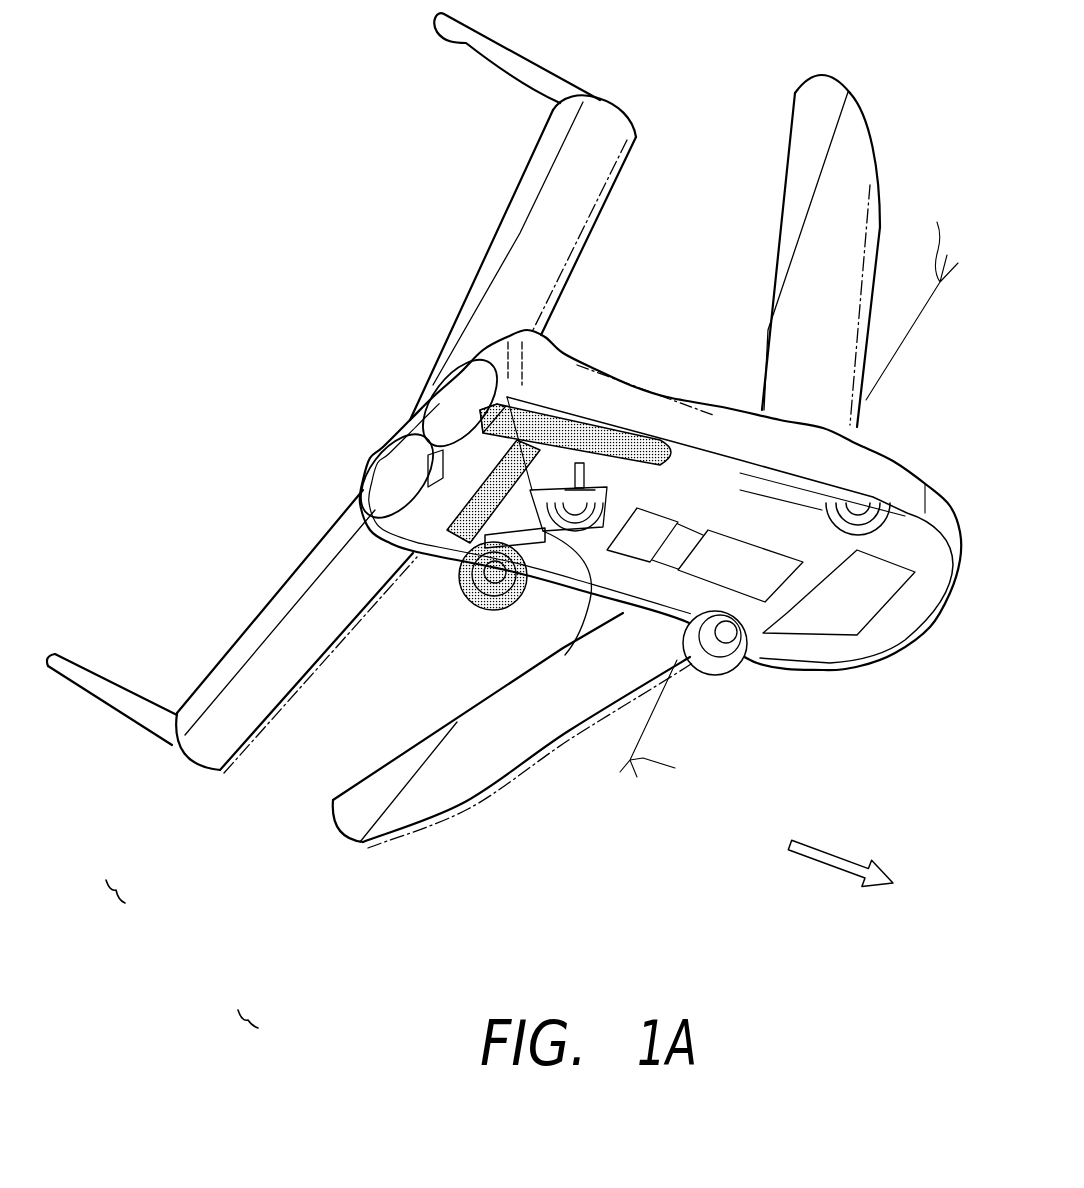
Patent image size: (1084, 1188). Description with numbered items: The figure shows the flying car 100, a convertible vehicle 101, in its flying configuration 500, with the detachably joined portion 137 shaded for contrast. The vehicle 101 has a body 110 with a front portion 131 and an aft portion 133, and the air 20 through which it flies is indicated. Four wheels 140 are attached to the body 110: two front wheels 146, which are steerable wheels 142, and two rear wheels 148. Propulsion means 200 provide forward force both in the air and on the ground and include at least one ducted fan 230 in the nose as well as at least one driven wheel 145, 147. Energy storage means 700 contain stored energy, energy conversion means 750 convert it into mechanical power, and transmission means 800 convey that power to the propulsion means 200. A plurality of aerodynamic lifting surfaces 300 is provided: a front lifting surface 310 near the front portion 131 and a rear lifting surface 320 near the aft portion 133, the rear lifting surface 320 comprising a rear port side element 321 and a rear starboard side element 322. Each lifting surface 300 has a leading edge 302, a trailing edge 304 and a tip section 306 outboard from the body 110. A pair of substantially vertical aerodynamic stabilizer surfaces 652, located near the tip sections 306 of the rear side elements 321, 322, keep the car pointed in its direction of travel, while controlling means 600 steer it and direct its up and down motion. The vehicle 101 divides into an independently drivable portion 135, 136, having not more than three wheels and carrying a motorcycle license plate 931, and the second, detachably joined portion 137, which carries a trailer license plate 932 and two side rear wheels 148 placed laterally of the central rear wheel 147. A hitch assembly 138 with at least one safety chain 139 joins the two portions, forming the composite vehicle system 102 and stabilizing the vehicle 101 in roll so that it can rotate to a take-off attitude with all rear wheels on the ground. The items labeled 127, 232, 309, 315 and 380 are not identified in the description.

The air 20 is at (256, 170).
The flying car 100 is at (235, 1040).
The vehicle 101 is at (235, 1040).
The composite vehicle system 102 is at (90, 913).
The body 110 is at (635, 410).
The forward direction 127 is at (825, 863).
The front portion 131 is at (937, 610).
The aft portion 133 is at (470, 343).
The independently drivable portion 135 is at (336, 439).
The independently drivable portion 136 is at (572, 598).
The detachably joined portion 137 is at (385, 482).
The hitch assembly 138 is at (548, 490).
The safety chain 139 is at (517, 490).
The wheels 140 is at (806, 569).
The steerable wheel 142 is at (806, 569).
The driven wheel 145 is at (525, 597).
The front wheels 146 is at (722, 665).
The central rear wheel 147 is at (578, 636).
The rear wheels 148 is at (655, 457).
The propulsion means 200 is at (330, 468).
The ducted fan 230 is at (365, 432).
The nose opening 232 is at (463, 372).
The aerodynamic lifting surfaces 300 is at (827, 227).
The leading edge 302 is at (287, 708).
The trailing edge 304 is at (503, 203).
The tip section 306 is at (620, 118).
The wing 309 is at (620, 470).
The front lifting surface 310 is at (490, 797).
The pivot axis 315 is at (789, 487).
The rear lifting surface 320 is at (330, 673).
The rear port side element 321 is at (287, 613).
The rear starboard side element 322 is at (558, 172).
The wing tip section 380 is at (810, 102).
The flying configuration 500 is at (90, 913).
The controlling means 600 is at (320, 379).
The vertical aerodynamic stabilizer surfaces 652 is at (467, 40).
The energy storage means 700 is at (747, 567).
The energy conversion means 750 is at (685, 537).
The transmission means 800 is at (645, 530).
The motorcycle license plate 931 is at (437, 470).
The trailer license plate 932 is at (483, 430).